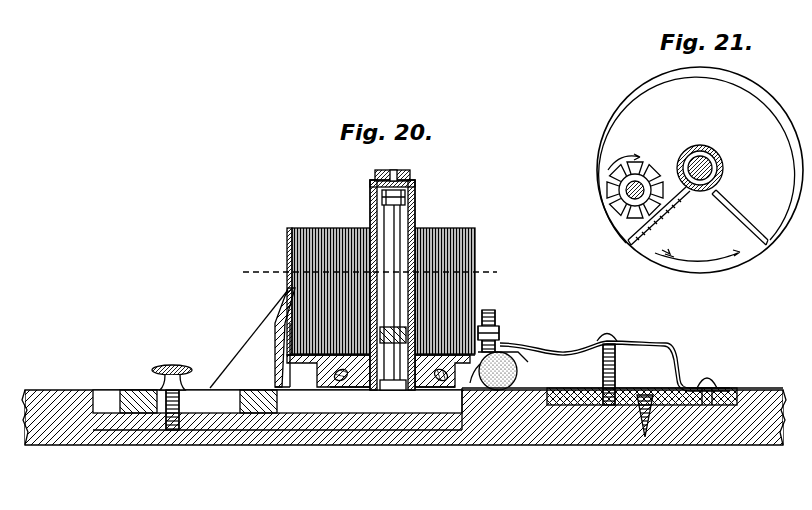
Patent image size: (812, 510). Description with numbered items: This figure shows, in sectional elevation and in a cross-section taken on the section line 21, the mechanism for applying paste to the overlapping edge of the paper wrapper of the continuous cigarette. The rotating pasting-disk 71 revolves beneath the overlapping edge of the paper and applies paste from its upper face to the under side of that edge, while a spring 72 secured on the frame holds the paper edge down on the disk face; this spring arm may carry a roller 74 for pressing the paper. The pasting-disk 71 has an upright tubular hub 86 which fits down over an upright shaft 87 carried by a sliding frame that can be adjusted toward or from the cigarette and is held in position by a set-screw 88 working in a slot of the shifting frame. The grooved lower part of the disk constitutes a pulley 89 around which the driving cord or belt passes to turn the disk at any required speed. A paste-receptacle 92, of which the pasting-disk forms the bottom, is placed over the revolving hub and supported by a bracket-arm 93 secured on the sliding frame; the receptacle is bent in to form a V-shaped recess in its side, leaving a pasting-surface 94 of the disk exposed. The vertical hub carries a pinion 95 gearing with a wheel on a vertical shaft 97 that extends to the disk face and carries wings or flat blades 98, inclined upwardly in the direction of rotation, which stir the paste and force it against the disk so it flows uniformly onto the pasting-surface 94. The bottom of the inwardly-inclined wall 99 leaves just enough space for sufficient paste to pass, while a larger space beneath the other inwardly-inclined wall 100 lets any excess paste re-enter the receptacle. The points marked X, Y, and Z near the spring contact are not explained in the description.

In FIG. 20, the section line 21 is at (370, 272).
In FIG. 20, the pasting-disk 71 is at (348, 353).
In FIG. 20, the spring 72 is at (615, 381).
In FIG. 20, the roller 74 is at (489, 322).
In FIG. 20, the upright tubular hub 86 is at (416, 205).
In FIG. 21, the upright tubular hub 86 is at (710, 153).
In FIG. 20, the upright shaft 87 is at (395, 213).
In FIG. 21, the upright shaft 87 is at (722, 168).
In FIG. 20, the set-screw 88 is at (172, 388).
In FIG. 20, the pulley 89 is at (337, 380).
In FIG. 20, the paste-receptacle 92 is at (284, 285).
In FIG. 20, the bracket-arm 93 is at (252, 338).
In FIG. 20, the pasting-surface 94 is at (303, 352).
In FIG. 21, the pasting-surface 94 is at (700, 170).
In FIG. 20, the pinion 95 is at (410, 175).
In FIG. 21, the vertical shaft 97 is at (614, 202).
In FIG. 21, the wings or flat blades 98 is at (645, 178).
In FIG. 21, the inwardly-inclined wall 99 is at (662, 216).
In FIG. 21, the inwardly-inclined wall 100 is at (745, 212).
In FIG. 20, the contact point X is at (468, 377).
In FIG. 20, the contact ball Y is at (519, 374).
In FIG. 20, the contact plate Z is at (512, 363).